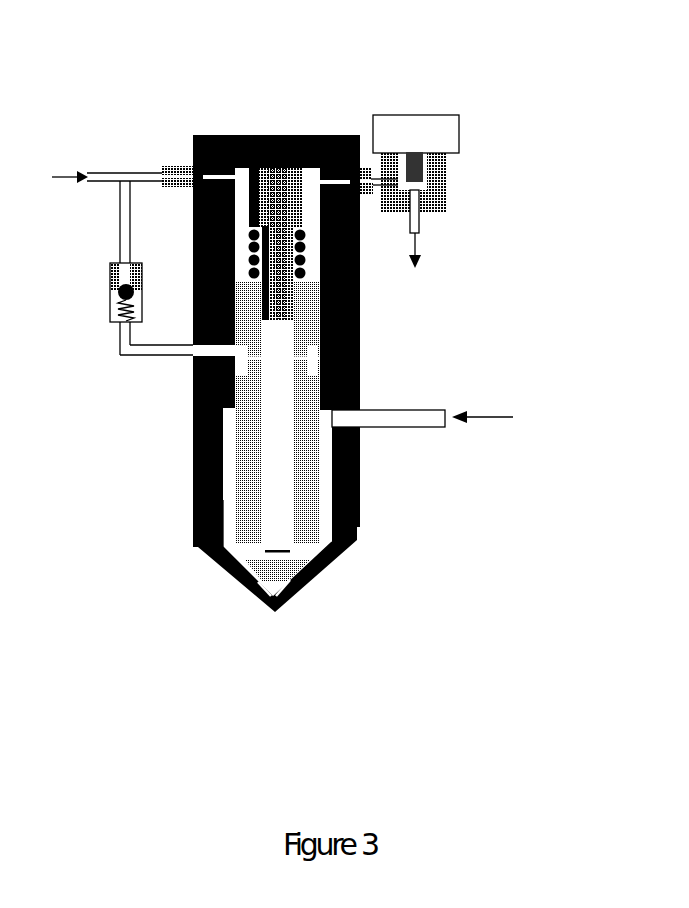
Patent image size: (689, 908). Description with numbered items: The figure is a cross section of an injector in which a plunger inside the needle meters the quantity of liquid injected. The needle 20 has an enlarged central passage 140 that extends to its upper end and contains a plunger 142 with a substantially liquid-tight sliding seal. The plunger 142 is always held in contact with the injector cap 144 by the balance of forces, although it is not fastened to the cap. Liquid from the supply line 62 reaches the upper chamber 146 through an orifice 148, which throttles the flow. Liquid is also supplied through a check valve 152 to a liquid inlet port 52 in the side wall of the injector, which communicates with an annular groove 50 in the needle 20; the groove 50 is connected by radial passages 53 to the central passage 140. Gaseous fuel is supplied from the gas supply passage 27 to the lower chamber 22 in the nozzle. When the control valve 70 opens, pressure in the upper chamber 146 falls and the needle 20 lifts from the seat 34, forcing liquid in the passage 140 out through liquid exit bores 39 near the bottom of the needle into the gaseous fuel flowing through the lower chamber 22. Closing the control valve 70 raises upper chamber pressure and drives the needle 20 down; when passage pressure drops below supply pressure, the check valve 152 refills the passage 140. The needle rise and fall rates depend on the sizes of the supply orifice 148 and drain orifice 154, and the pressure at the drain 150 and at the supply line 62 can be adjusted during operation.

The needle 20 is at (247, 487).
The lower chamber 22 is at (328, 537).
The gas supply passage 27 is at (440, 425).
The seat 34 is at (323, 572).
The liquid exit bores 39 is at (222, 530).
The annular groove 50 is at (235, 370).
The liquid inlet port 52 is at (243, 362).
The radial passages 53 is at (205, 390).
The supply line 62 is at (102, 162).
The control valve 70 is at (465, 169).
The central passage 140 is at (278, 443).
The plunger 142 is at (300, 295).
The injector cap 144 is at (267, 135).
The upper chamber 146 is at (310, 212).
The orifice 148 is at (167, 167).
The drain 150 is at (438, 229).
The check valve 152 is at (105, 281).
The drain orifice 154 is at (363, 195).